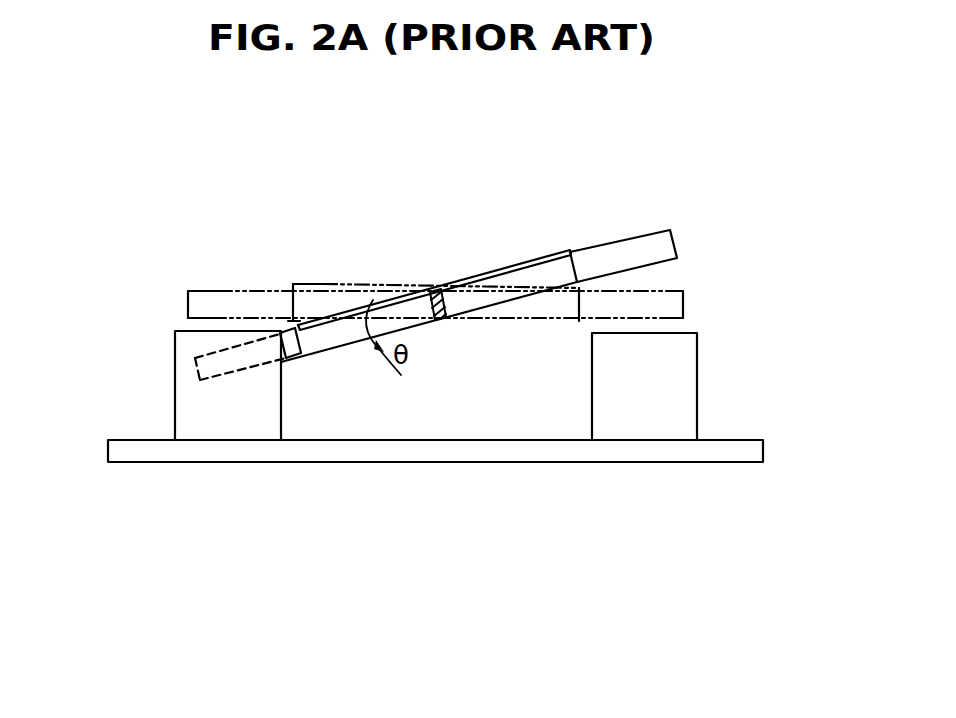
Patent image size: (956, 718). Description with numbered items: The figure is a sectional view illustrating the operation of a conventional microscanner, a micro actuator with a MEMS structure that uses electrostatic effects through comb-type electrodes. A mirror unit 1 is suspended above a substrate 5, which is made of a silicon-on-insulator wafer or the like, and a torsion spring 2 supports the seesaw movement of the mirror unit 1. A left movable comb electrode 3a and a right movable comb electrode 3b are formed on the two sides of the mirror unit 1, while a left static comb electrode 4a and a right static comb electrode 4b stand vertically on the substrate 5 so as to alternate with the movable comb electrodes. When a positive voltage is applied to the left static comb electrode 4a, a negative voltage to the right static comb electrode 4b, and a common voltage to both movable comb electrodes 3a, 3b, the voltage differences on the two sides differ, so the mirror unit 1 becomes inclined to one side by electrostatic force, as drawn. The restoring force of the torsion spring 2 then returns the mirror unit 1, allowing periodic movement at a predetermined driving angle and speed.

The mirror unit 1 is at (545, 257).
The torsion spring 2 is at (444, 289).
The left movable comb electrode 3a is at (210, 365).
The right movable comb electrode 3b is at (663, 247).
The left static comb electrode 4a is at (202, 415).
The right static comb electrode 4b is at (672, 395).
The substrate 5 is at (750, 452).